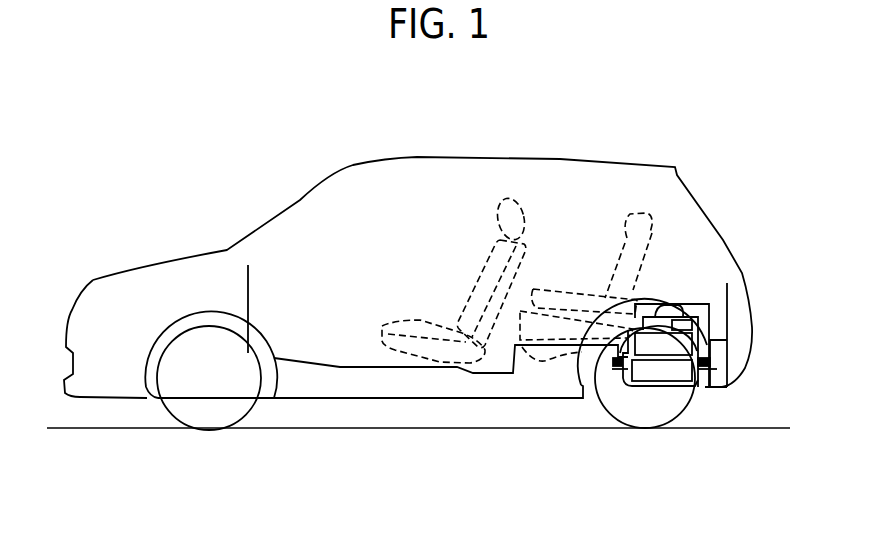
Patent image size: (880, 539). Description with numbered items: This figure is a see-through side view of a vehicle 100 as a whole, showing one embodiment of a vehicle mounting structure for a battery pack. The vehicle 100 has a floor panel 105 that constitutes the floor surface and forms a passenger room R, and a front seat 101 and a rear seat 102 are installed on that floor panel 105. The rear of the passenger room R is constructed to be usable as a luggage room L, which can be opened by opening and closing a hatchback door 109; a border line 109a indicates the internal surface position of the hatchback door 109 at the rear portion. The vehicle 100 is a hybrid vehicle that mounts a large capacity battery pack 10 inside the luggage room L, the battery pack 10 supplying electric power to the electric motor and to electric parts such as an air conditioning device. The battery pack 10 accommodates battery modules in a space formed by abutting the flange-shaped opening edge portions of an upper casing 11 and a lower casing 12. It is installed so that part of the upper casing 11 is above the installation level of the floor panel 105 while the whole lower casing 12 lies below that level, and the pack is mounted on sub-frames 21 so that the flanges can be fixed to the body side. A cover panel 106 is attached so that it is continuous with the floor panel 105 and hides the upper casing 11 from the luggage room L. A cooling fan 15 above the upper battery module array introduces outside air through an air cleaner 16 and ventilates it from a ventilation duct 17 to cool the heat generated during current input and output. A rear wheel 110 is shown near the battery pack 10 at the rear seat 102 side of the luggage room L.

The vehicle 100 is at (327, 133).
The passenger room R is at (462, 182).
The front seat 101 is at (505, 197).
The rear seat 102 is at (645, 213).
The floor panel 105 is at (373, 370).
The hatchback door 109 is at (687, 190).
The luggage room L is at (710, 265).
The cover panel 106 is at (687, 302).
The air cleaner 16 is at (662, 303).
The cooling fan 15 is at (703, 320).
The upper casing 11 is at (705, 322).
The border line 109a is at (730, 328).
The ventilation duct 17 is at (722, 385).
The battery pack 10 is at (620, 390).
The lower casing 12 is at (633, 388).
The sub-frame 21 is at (612, 383).
The wheel 110 is at (683, 417).